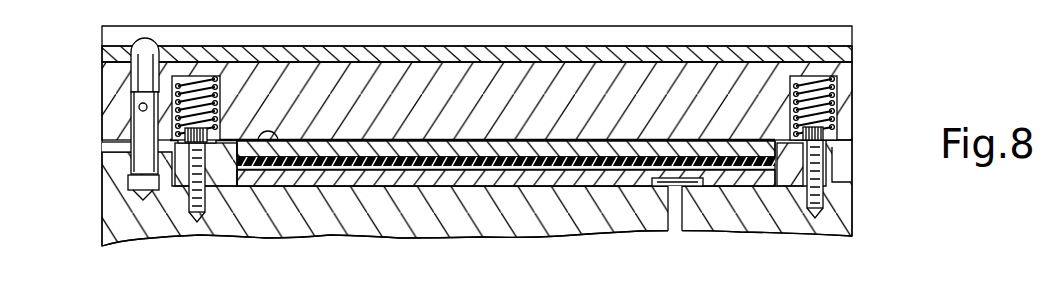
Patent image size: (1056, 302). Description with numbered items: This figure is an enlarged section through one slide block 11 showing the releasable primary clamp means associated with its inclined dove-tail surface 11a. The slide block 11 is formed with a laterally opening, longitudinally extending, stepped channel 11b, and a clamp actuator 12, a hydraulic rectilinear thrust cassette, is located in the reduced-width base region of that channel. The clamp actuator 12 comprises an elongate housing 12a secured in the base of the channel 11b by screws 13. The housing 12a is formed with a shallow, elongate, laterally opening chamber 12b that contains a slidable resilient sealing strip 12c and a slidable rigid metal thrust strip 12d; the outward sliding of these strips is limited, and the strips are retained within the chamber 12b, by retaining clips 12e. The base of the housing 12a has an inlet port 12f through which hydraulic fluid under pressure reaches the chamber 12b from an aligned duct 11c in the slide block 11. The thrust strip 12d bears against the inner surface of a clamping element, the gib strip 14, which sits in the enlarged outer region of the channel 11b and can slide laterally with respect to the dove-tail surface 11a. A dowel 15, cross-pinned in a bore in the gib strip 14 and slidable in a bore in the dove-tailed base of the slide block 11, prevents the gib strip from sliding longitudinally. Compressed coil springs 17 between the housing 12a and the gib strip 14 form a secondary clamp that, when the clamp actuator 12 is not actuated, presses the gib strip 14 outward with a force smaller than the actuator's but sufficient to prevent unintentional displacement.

The slide block 11 is at (92, 188).
The dove-tail surface 11a is at (842, 35).
The stepped channel 11b is at (843, 167).
The duct 11c is at (674, 231).
The clamp actuator 12 is at (508, 205).
The housing 12a is at (787, 172).
The chamber 12b is at (613, 170).
The sealing strip 12c is at (468, 163).
The thrust strip 12d is at (380, 143).
The retaining clips 12e is at (268, 141).
The inlet port 12f is at (673, 188).
The screws 13 is at (195, 223).
The gib strip 14 is at (614, 111).
The dowel 15 is at (138, 122).
The compressed coil springs 17 is at (835, 102).